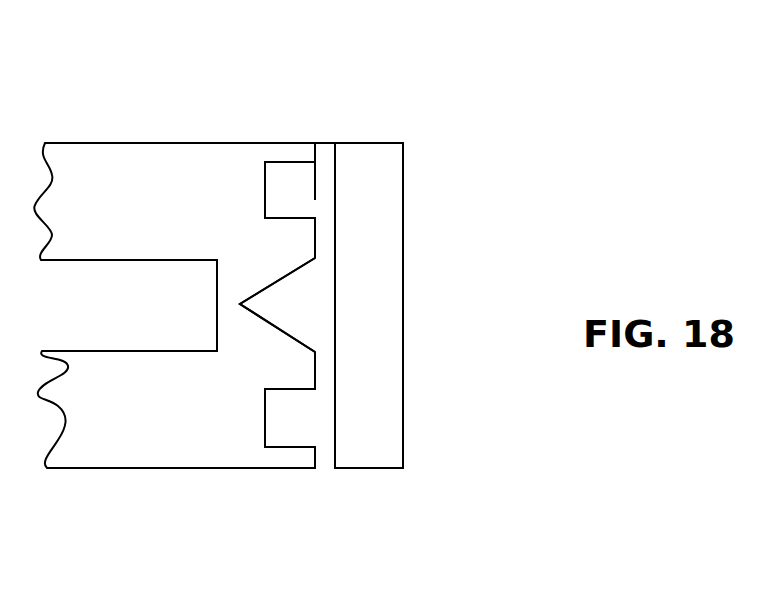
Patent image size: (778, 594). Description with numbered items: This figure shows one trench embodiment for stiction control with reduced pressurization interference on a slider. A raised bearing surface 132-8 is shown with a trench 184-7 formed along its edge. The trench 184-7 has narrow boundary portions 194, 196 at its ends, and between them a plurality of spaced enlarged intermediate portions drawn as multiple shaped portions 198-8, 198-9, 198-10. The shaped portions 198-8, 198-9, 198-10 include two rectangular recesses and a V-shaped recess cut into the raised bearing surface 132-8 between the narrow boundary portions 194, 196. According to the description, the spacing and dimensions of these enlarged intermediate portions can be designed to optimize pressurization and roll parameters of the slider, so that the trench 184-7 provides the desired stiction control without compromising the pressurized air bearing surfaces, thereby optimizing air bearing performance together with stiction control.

The raised bearing surface 132-8 is at (119, 160).
The narrow boundary portion 194 is at (318, 153).
The narrow boundary portion 196 is at (327, 457).
The trench 184-7 is at (305, 182).
The shaped portion 198-8 is at (307, 195).
The shaped portion 198-9 is at (298, 300).
The shaped portion 198-10 is at (293, 412).